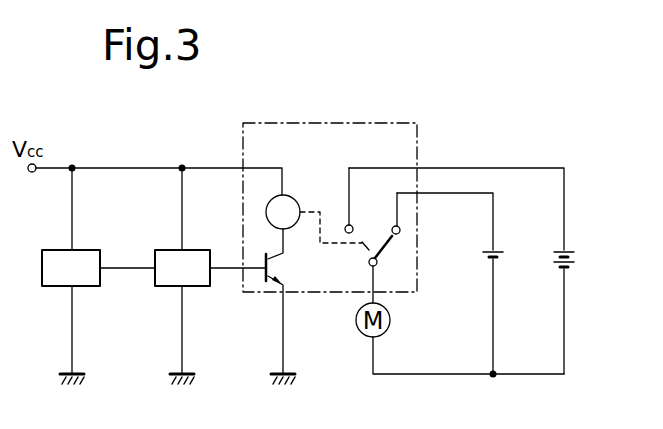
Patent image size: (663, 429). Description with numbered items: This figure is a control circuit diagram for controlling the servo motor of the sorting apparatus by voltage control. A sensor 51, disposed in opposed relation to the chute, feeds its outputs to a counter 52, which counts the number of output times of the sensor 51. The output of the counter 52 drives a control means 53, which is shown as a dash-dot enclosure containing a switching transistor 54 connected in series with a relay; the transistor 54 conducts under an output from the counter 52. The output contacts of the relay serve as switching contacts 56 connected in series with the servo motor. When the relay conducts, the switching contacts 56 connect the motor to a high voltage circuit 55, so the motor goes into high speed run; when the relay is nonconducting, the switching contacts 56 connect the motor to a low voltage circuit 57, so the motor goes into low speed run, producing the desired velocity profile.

The sensor 51 is at (71, 276).
The counter 52 is at (182, 276).
The control means 53 is at (298, 122).
The switching transistor 54 is at (270, 293).
The high voltage circuit 55 is at (528, 166).
The switching contacts 56 is at (382, 247).
The low voltage circuit 57 is at (494, 228).